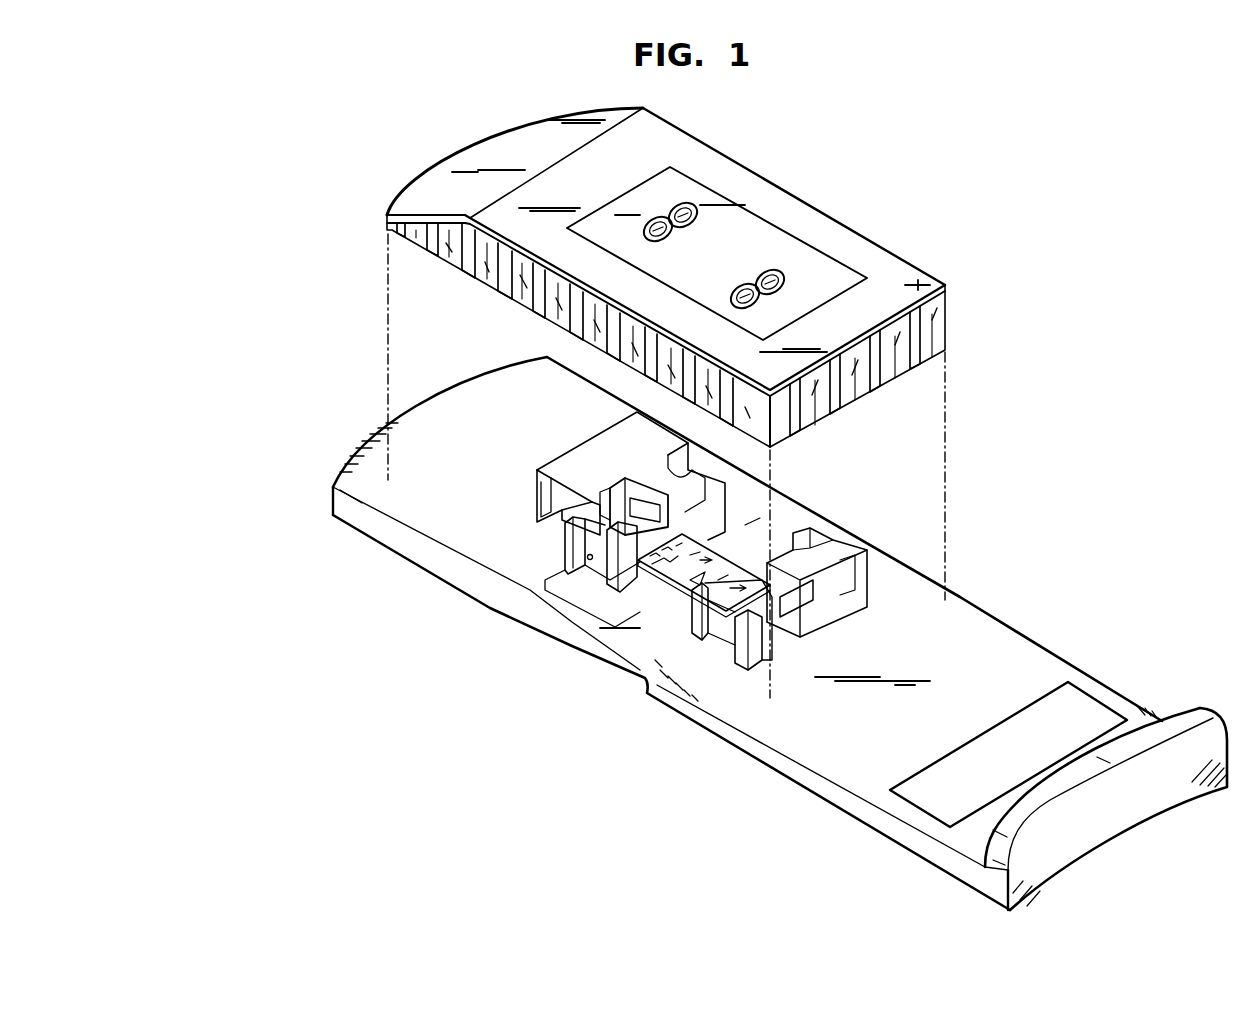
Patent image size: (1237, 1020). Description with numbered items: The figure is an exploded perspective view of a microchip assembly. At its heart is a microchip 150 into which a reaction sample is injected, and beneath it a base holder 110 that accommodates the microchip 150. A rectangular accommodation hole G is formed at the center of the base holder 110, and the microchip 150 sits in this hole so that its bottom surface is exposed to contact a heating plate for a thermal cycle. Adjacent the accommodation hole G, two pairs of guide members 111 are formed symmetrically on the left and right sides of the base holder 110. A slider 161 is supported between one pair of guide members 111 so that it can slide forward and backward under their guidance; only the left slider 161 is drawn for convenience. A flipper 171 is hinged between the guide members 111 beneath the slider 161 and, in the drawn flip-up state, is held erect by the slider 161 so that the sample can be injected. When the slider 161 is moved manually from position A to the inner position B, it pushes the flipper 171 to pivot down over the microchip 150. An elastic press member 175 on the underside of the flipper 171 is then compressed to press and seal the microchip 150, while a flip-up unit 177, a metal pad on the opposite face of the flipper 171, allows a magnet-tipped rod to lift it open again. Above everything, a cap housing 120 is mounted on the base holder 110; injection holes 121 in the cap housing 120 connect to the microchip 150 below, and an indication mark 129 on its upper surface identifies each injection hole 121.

The base holder 110 is at (298, 490).
The guide members 111 is at (867, 545).
The cap housing 120 is at (348, 206).
The injection hole 121 is at (687, 207).
The indication mark 129 is at (760, 258).
The microchip 150 is at (673, 593).
The slider 161 is at (565, 462).
The flipper 171 is at (638, 477).
The elastic press member 175 is at (598, 488).
The flip-up unit 177 is at (797, 603).
The position A is at (530, 522).
The position B is at (558, 567).
The accommodation hole G is at (755, 520).